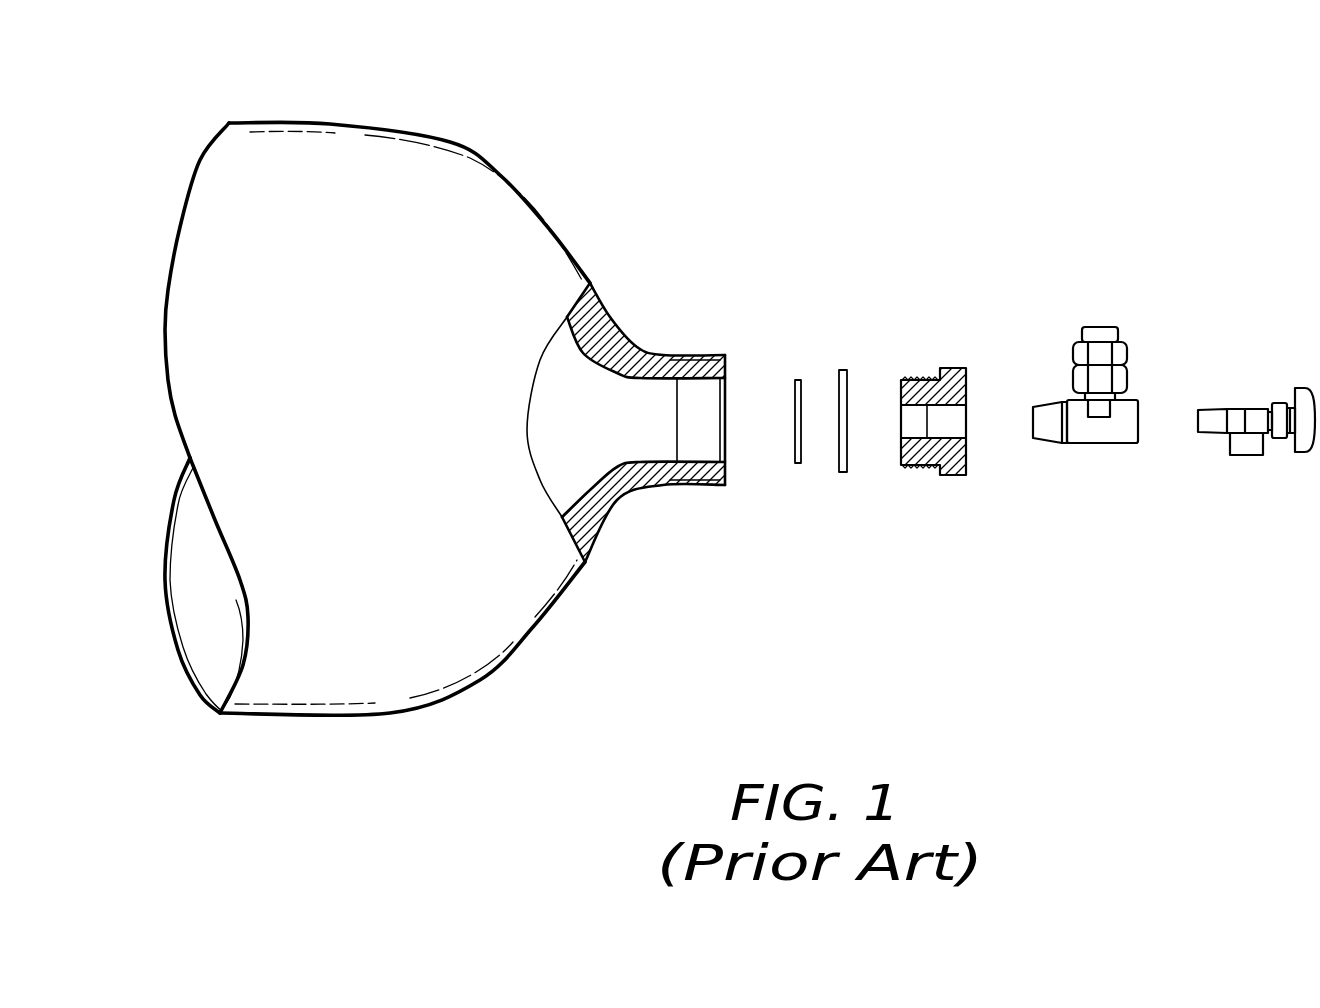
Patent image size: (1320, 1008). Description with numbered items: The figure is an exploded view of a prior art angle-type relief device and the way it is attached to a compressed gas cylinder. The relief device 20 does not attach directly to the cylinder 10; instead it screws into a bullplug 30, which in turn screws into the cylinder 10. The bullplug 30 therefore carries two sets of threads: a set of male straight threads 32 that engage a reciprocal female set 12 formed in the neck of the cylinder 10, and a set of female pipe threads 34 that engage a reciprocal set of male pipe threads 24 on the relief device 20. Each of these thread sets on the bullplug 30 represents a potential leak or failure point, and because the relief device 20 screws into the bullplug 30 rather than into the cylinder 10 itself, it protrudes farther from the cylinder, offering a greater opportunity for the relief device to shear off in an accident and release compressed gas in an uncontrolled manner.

The cylinder 10 is at (317, 122).
The female threads 12 is at (700, 380).
The relief device 20 is at (1108, 443).
The male pipe threads 24 is at (1045, 440).
The bullplug 30 is at (943, 428).
The male straight threads 32 is at (920, 378).
The female pipe threads 34 is at (960, 437).